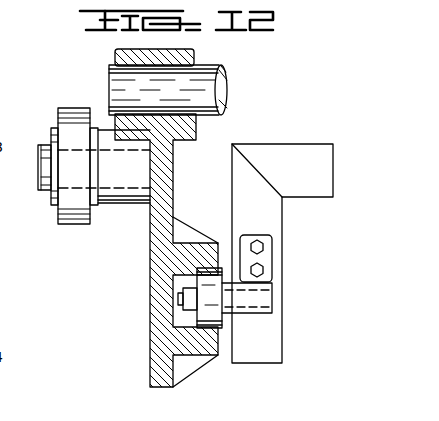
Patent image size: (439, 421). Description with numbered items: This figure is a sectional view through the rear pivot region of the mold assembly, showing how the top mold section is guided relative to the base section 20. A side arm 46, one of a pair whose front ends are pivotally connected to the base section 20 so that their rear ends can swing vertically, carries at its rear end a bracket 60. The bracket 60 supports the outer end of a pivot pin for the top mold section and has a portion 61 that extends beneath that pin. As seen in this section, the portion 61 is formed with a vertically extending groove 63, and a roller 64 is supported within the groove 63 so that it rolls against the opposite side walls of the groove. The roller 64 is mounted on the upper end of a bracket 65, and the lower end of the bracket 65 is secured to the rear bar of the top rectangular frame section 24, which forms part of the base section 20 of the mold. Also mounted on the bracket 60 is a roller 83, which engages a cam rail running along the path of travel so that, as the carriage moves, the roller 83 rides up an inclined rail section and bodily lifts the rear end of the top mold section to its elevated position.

The base section 20 is at (336, 157).
The top rectangular section 24 is at (281, 142).
The arm 46 is at (216, 102).
The bracket 60 is at (148, 270).
The portion 61 is at (165, 224).
The groove 63 is at (176, 310).
The roller 64 is at (222, 325).
The bracket 65 is at (268, 283).
The roller 83 is at (73, 222).